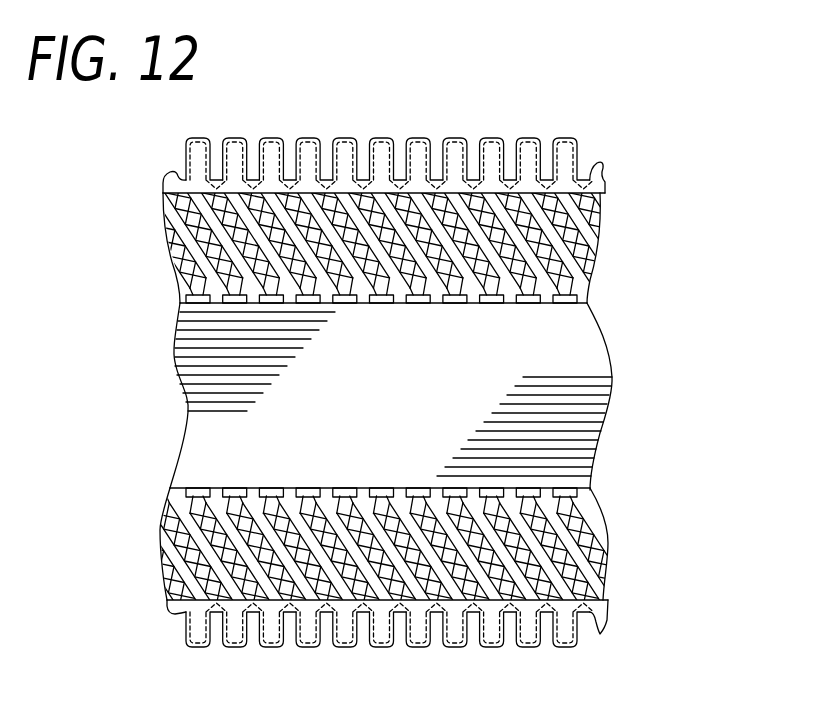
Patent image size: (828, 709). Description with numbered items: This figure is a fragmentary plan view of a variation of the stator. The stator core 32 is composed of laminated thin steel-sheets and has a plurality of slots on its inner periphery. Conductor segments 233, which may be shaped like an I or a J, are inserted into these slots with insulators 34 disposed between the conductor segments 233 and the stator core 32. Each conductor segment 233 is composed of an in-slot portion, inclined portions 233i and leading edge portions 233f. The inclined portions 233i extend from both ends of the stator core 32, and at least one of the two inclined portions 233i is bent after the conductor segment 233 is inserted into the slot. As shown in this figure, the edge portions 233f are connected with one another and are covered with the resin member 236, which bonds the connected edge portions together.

The stator core 32 is at (587, 340).
The insulators 34 is at (590, 492).
The conductor segment 233 is at (423, 374).
The leading edge portions 233f is at (410, 374).
The inclined portions 233i is at (595, 227).
The resin member 236 is at (343, 137).